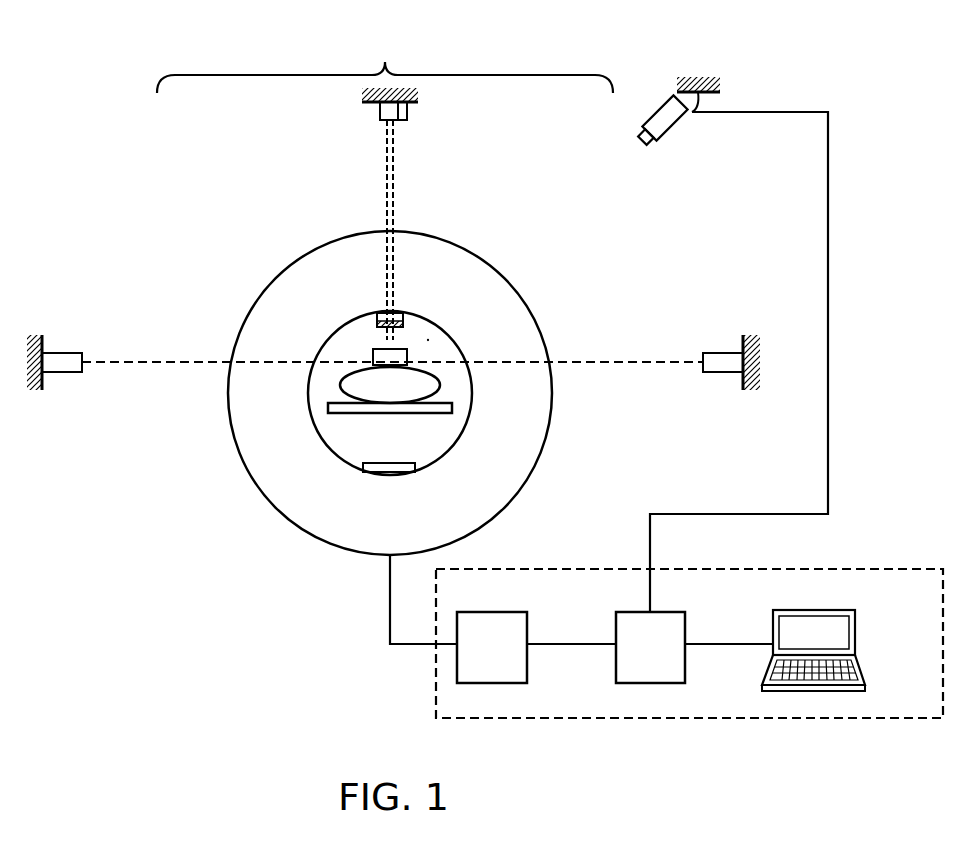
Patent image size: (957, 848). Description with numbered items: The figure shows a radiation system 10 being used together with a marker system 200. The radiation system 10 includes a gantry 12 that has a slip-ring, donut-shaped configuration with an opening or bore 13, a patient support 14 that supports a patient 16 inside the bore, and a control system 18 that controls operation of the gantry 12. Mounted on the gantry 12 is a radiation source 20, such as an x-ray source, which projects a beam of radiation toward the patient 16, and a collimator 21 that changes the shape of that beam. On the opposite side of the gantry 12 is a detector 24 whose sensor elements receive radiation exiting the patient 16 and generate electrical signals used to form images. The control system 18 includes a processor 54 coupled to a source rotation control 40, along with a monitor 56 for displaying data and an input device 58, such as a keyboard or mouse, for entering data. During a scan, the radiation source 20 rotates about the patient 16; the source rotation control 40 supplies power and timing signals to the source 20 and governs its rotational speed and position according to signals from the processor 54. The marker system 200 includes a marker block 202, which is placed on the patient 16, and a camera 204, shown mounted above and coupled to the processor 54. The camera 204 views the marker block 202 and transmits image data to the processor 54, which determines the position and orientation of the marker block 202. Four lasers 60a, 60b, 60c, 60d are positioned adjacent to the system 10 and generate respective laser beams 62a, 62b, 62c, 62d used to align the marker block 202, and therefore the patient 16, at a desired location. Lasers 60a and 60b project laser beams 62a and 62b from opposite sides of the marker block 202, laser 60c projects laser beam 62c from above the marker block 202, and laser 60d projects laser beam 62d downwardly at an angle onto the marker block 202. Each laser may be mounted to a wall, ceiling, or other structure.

The radiation system 10 is at (658, 247).
The gantry 12 is at (460, 242).
The opening (or bore) 13 is at (428, 340).
The patient support 14 is at (445, 413).
The patient 16 is at (448, 336).
The control system 18 is at (830, 569).
The radiation source 20 is at (392, 313).
The collimator 21 is at (377, 325).
The detector 24 is at (383, 462).
The source rotation control 40 is at (492, 647).
The processor 54 is at (650, 647).
The monitor 56 is at (857, 633).
The input device 58 is at (865, 677).
The laser 60a is at (62, 353).
The laser 60b is at (725, 353).
The laser 60c is at (407, 112).
The laser 60d is at (380, 110).
The laser beam 62a is at (130, 366).
The laser beam 62b is at (615, 366).
The laser beam 62c is at (393, 188).
The laser beam 62d is at (387, 165).
The marker system 200 is at (385, 61).
The marker block 202 is at (373, 360).
The camera 204 is at (672, 130).